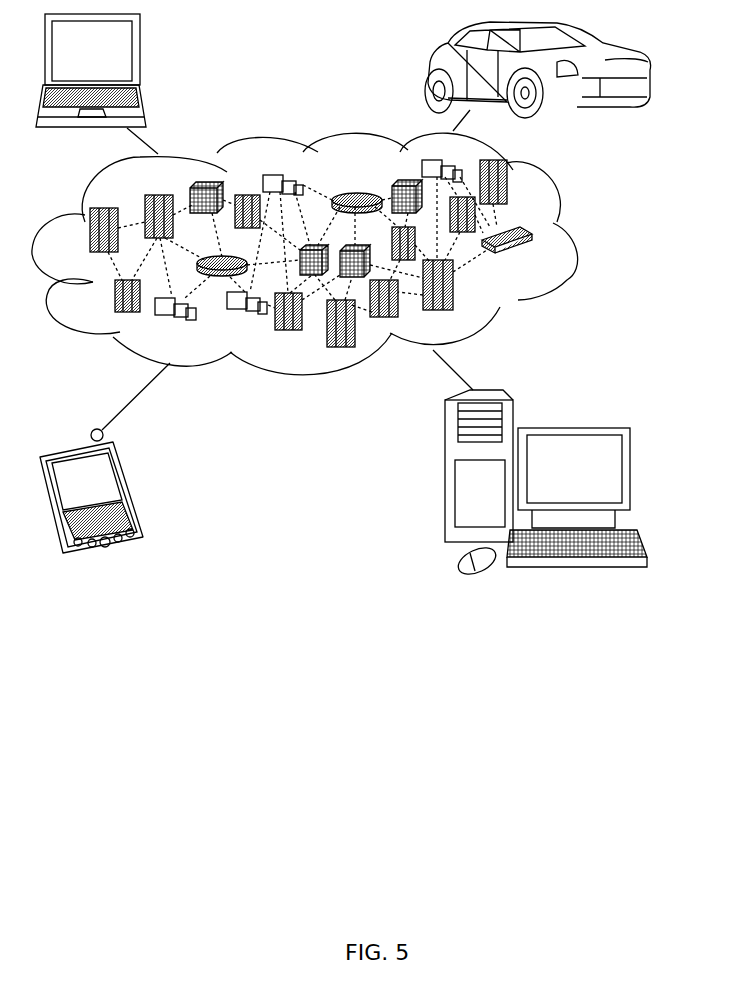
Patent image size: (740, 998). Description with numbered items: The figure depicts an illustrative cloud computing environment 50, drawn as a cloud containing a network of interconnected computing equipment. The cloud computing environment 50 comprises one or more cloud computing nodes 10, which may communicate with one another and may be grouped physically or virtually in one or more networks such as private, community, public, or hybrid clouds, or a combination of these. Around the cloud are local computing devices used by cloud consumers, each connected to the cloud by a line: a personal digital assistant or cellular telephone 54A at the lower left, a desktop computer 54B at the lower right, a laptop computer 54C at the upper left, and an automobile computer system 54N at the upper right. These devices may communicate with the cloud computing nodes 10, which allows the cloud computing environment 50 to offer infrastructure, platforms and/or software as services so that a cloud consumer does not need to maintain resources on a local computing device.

The cloud computing environment 50 is at (573, 236).
The cloud computing node 10 is at (536, 259).
The laptop computer 54C is at (140, 55).
The automobile computer system 54N is at (425, 68).
The personal digital assistant or cellular telephone 54A is at (130, 487).
The desktop computer 54B is at (570, 428).